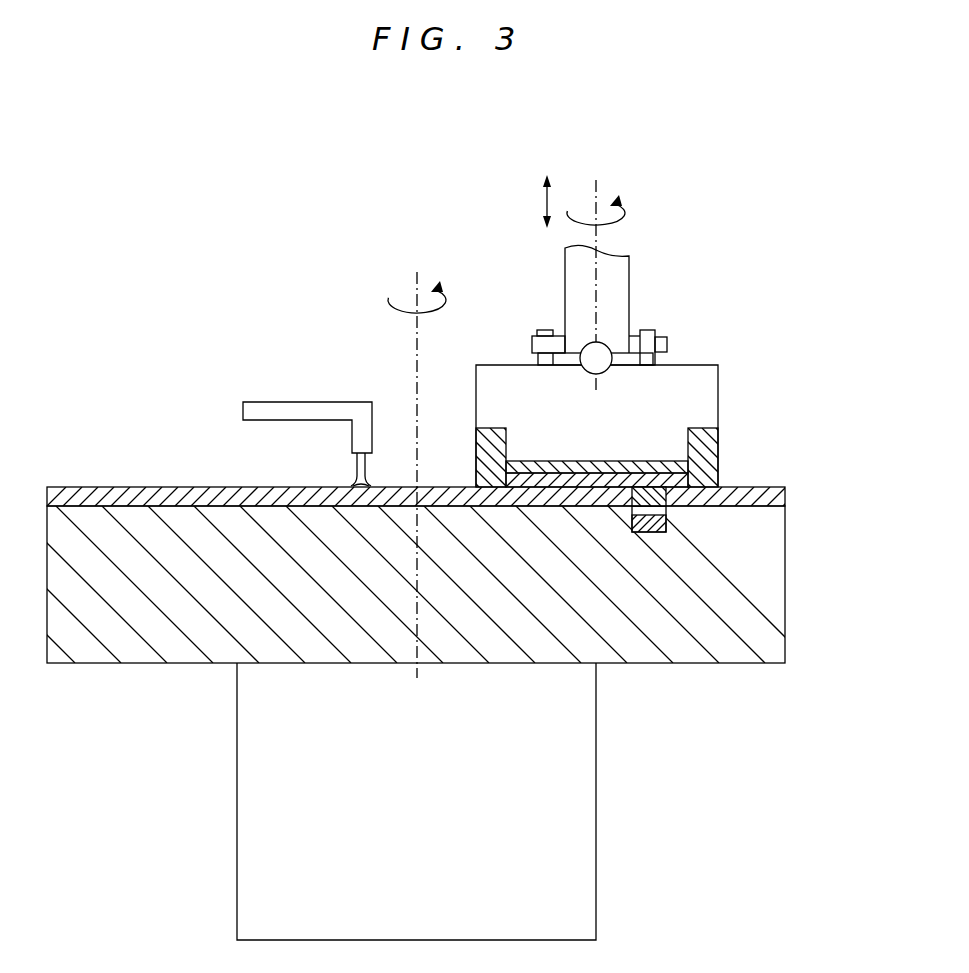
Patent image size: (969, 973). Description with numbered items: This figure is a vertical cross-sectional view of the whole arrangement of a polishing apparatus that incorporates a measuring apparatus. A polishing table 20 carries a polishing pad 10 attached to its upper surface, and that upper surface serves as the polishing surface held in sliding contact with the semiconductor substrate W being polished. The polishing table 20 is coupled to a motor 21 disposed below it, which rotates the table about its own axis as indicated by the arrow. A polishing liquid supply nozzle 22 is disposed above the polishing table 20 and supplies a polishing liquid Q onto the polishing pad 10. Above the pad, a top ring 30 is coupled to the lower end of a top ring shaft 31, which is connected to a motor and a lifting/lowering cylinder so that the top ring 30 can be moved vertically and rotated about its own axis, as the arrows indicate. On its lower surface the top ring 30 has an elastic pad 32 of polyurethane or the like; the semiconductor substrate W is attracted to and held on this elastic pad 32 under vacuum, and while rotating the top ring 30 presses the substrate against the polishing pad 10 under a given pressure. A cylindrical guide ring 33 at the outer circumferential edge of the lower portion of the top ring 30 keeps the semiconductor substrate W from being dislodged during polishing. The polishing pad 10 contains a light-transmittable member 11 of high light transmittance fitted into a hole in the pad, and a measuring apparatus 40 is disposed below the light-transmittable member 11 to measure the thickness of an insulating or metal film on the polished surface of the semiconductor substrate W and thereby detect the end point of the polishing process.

The polishing pad 10 is at (143, 483).
The light-transmittable member 11 is at (667, 507).
The polishing table 20 is at (785, 607).
The motor 21 is at (596, 800).
The polishing liquid supply nozzle 22 is at (298, 402).
The top ring 30 is at (710, 385).
The top ring shaft 31 is at (618, 282).
The elastic pad 32 is at (688, 466).
The guide ring 33 is at (710, 435).
The measuring apparatus 40 is at (667, 530).
The polishing liquid Q is at (357, 468).
The semiconductor substrate W is at (523, 478).